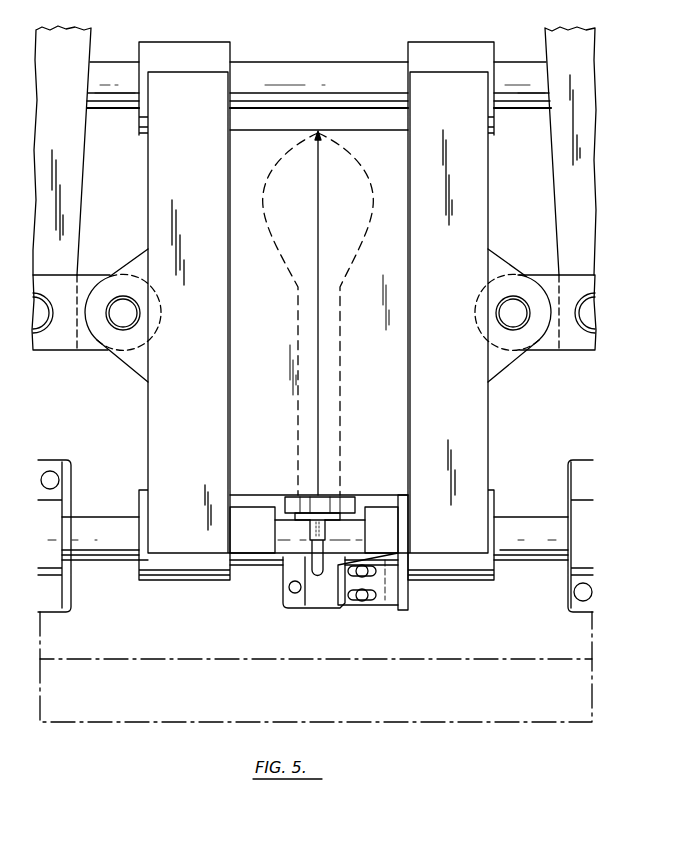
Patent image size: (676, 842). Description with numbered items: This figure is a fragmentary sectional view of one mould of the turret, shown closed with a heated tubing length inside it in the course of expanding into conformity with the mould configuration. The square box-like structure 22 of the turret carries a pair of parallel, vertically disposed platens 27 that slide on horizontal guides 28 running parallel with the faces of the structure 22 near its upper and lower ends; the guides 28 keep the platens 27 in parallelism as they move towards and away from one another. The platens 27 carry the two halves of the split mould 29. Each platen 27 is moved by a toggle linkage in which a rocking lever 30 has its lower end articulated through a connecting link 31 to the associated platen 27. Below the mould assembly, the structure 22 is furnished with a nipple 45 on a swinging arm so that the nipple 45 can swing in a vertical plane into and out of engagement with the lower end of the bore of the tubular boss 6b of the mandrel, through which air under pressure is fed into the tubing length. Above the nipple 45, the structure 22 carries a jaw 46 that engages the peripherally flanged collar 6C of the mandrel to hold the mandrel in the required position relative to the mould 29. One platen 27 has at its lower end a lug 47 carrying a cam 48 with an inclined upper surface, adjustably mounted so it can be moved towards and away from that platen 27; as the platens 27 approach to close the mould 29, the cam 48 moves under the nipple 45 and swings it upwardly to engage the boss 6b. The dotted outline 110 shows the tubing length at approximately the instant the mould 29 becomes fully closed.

The box-like structure 22 is at (473, 641).
The platen 27 is at (170, 395).
The horizontal guide 28 is at (304, 68).
The split mould 29 is at (272, 427).
The rocking lever 30 is at (72, 187).
The connecting link 31 is at (81, 343).
The nipple 45 is at (313, 567).
The jaw 46 is at (344, 503).
The lug 47 is at (390, 600).
The cam 48 is at (328, 600).
The collar 6C is at (297, 520).
The tubular boss 6b is at (328, 530).
The dotted outline of tubing length 110 is at (358, 166).